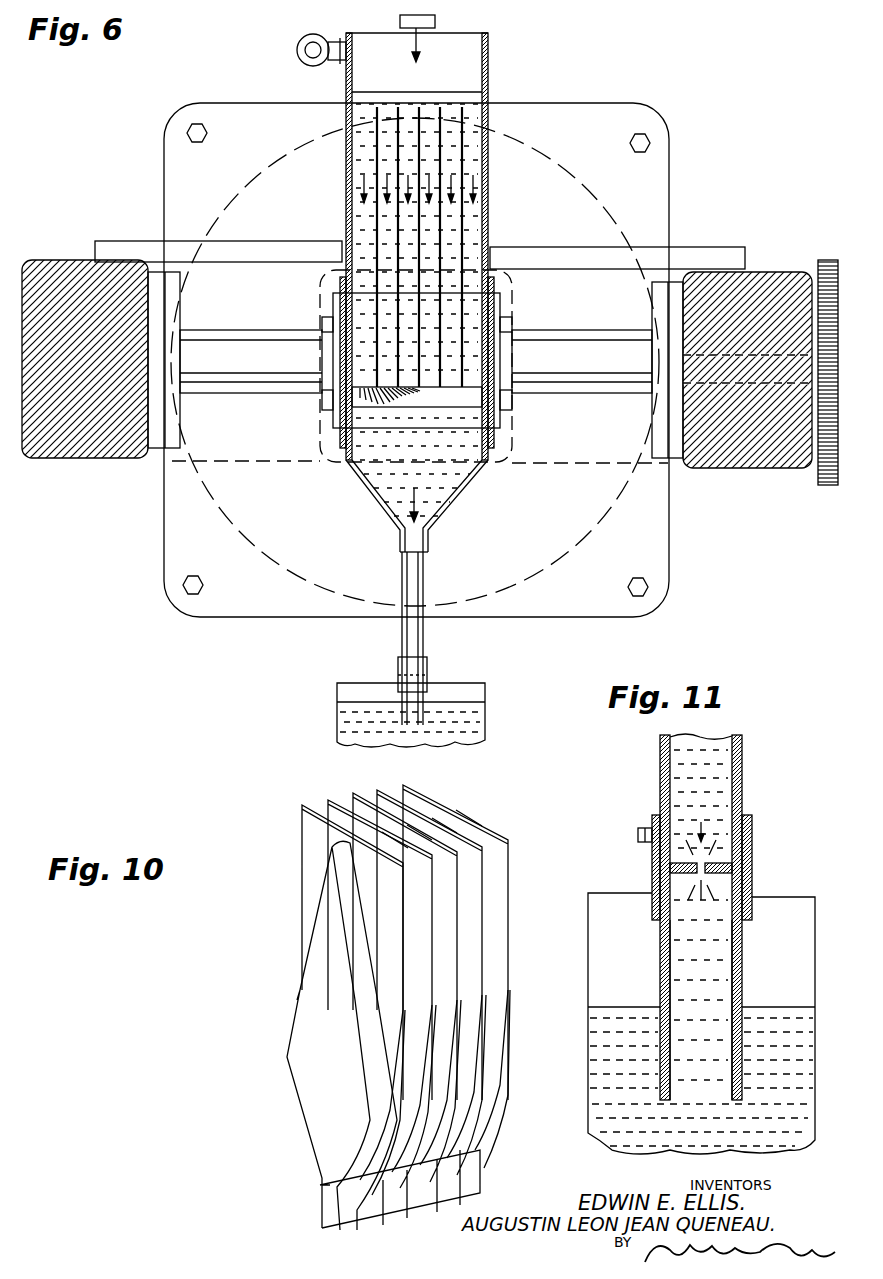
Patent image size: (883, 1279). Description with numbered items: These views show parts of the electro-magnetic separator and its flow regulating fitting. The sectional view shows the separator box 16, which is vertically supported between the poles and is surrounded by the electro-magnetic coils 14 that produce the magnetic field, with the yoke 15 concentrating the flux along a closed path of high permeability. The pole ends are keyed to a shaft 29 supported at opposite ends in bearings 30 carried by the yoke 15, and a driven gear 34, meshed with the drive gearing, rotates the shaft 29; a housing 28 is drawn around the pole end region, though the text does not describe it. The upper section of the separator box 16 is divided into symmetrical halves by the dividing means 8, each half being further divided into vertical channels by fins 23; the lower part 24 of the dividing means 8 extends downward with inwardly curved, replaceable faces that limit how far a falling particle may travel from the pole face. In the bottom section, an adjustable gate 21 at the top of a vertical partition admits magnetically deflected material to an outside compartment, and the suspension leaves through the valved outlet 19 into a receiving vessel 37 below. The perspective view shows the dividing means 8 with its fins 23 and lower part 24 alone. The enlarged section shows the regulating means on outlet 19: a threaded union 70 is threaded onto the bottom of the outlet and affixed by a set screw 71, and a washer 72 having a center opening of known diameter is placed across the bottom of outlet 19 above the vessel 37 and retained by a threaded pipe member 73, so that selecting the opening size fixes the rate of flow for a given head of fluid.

In FIG. 6, the electro-magnetic coils 14 is at (176, 492).
In FIG. 6, the yoke 15 is at (35, 262).
In FIG. 6, the separator box 16 is at (346, 182).
In FIG. 6, the valved outlet opening 19 is at (424, 648).
In FIG. 11, the valved outlet opening 19 is at (744, 785).
In FIG. 6, the adjustable gate 21 is at (376, 395).
In FIG. 6, the fins 23 is at (441, 235).
In FIG. 10, the fins 23 is at (302, 805).
In FIG. 6, the housing 28 is at (495, 319).
In FIG. 6, the shaft 29 is at (236, 333).
In FIG. 6, the bearings 30 is at (181, 436).
In FIG. 6, the driven gear 34 is at (827, 261).
In FIG. 6, the receiving vessel 37 is at (341, 708).
In FIG. 11, the receiving vessel 37 is at (701, 1023).
In FIG. 10, the dividing means 8 is at (322, 988).
In FIG. 10, the lower part 24 is at (331, 1143).
In FIG. 11, the threaded union 70 is at (753, 851).
In FIG. 11, the set screw 71 is at (639, 834).
In FIG. 11, the washer 72 is at (748, 881).
In FIG. 11, the threaded pipe member 73 is at (745, 950).